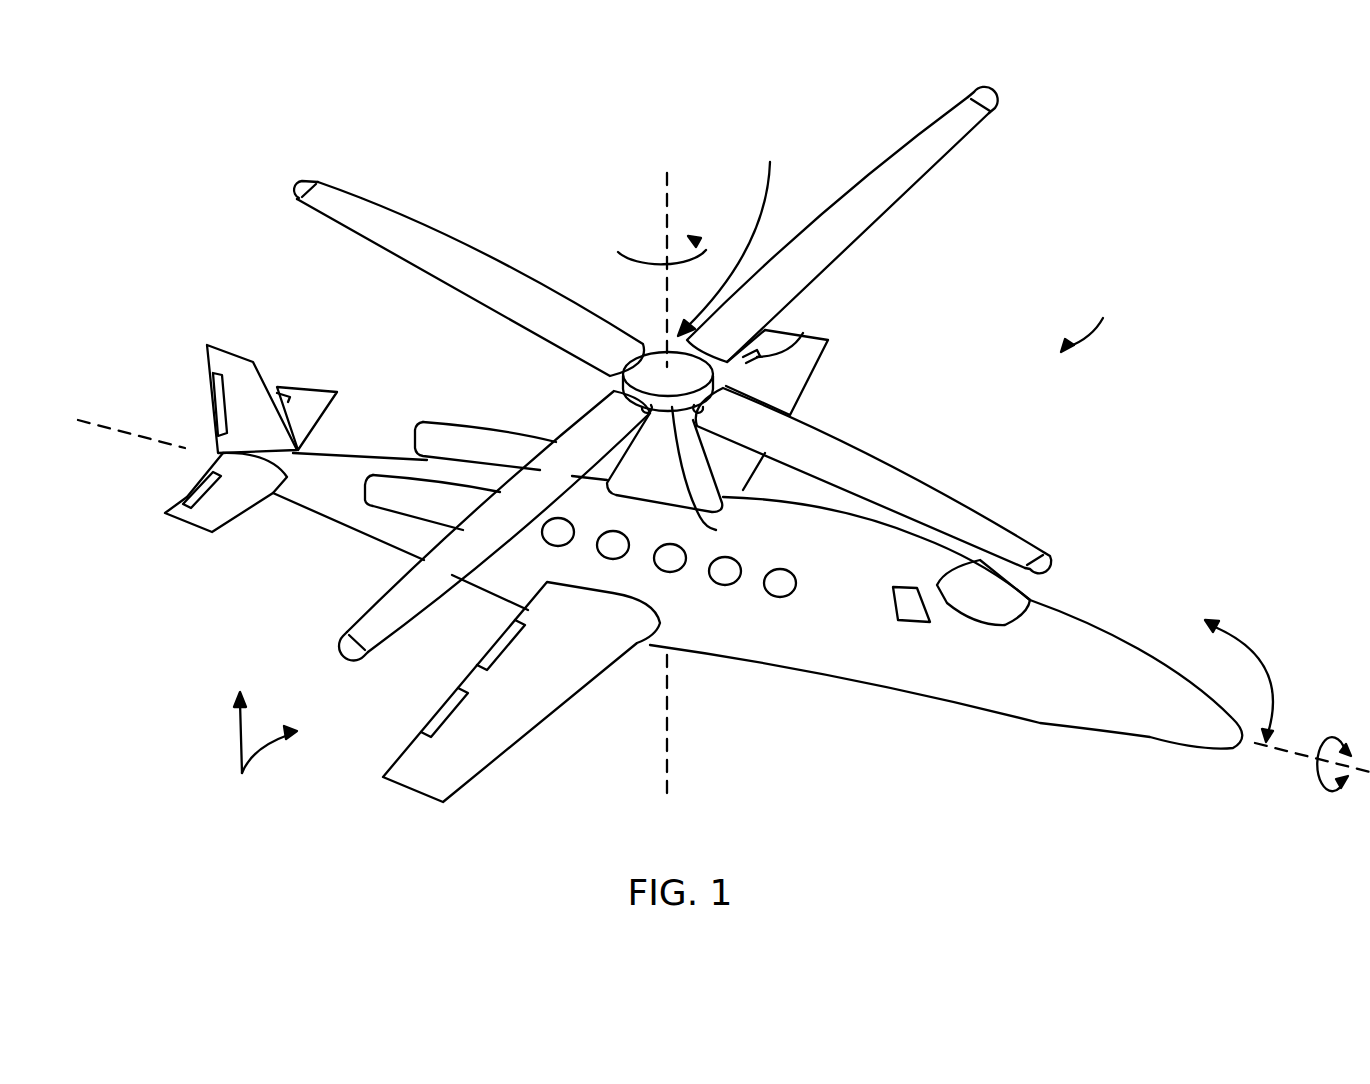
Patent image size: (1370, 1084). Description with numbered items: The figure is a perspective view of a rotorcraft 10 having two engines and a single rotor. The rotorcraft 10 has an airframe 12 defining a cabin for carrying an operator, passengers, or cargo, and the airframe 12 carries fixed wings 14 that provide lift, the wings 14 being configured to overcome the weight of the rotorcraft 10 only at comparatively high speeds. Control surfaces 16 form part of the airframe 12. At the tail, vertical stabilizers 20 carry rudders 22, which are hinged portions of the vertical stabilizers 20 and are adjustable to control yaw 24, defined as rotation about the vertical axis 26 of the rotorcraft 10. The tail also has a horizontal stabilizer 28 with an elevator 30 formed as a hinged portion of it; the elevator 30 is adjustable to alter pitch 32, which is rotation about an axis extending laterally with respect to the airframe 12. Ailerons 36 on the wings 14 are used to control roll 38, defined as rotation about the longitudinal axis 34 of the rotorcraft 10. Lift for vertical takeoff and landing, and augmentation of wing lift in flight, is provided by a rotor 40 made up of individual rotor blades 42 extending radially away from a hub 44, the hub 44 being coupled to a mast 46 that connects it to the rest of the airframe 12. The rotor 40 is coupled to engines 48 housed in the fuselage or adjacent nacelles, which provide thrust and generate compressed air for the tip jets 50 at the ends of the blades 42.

The rotorcraft 10 is at (1101, 324).
The airframe 12 is at (830, 668).
The fixed wing 14 is at (512, 730).
The control surfaces 16 is at (260, 748).
The vertical stabilizer 20 is at (233, 367).
The rudder 22 is at (216, 405).
The yaw 24 is at (620, 246).
The vertical axis 26 is at (668, 190).
The horizontal stabilizer 28 is at (227, 503).
The elevator 30 is at (193, 490).
The pitch 32 is at (1268, 656).
The longitudinal axis 34 is at (1292, 752).
The aileron 36 is at (520, 623).
The roll 38 is at (1327, 793).
The rotor 40 is at (731, 235).
The rotor blade 42 is at (437, 240).
The hub 44 is at (690, 447).
The mast 46 is at (660, 468).
The engine 48 is at (465, 438).
The tip jet 50 is at (313, 178).